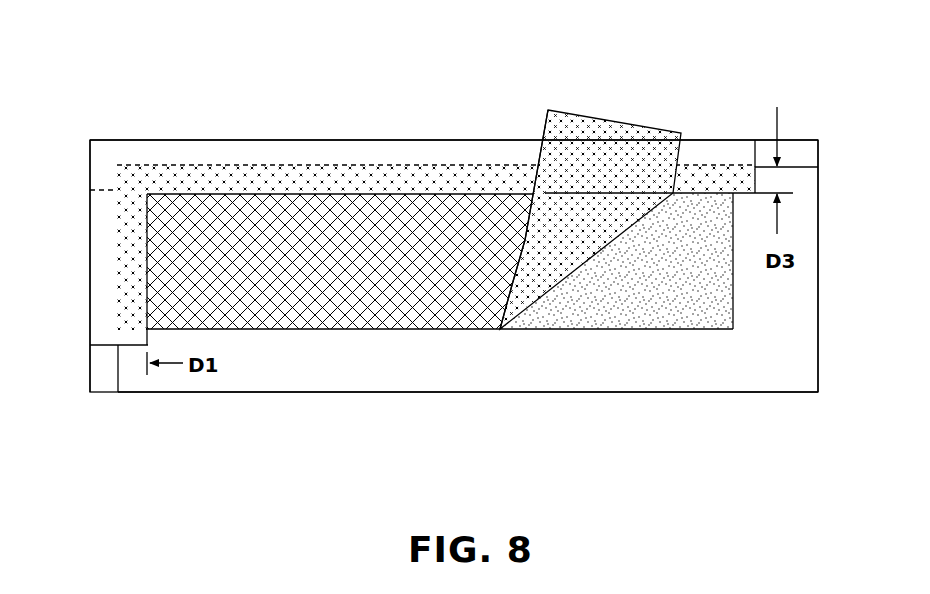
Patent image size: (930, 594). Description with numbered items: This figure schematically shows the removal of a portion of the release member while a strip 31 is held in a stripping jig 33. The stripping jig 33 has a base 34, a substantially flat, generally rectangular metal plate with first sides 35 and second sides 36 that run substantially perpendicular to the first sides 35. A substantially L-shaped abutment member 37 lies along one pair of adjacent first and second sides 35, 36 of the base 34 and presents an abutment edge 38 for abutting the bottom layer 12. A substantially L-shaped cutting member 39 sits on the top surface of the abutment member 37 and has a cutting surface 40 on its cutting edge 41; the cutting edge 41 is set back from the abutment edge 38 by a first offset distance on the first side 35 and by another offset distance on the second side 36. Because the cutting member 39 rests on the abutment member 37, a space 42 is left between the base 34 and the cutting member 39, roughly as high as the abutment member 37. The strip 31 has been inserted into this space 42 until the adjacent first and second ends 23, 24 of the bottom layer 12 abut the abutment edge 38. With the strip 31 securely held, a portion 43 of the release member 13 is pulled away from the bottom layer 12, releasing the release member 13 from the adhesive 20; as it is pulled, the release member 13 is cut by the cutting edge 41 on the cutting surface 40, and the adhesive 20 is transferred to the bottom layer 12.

The bottom layer 12 is at (660, 240).
The release member 13 is at (337, 315).
The adhesive 20 is at (720, 280).
The first end 23 is at (90, 190).
The second end 24 is at (508, 176).
The strip 31 is at (280, 317).
The stripping jig 33 is at (243, 140).
The base 34 is at (382, 360).
The first side 35 is at (798, 140).
The second side 36 is at (88, 276).
The abutment member 37 is at (102, 377).
The abutment edge 38 is at (297, 178).
The cutting member 39 is at (95, 168).
The cutting surface 40 is at (384, 210).
The cutting edge 41 is at (459, 210).
The space 42 is at (741, 185).
The portion of the release member 43 is at (610, 122).